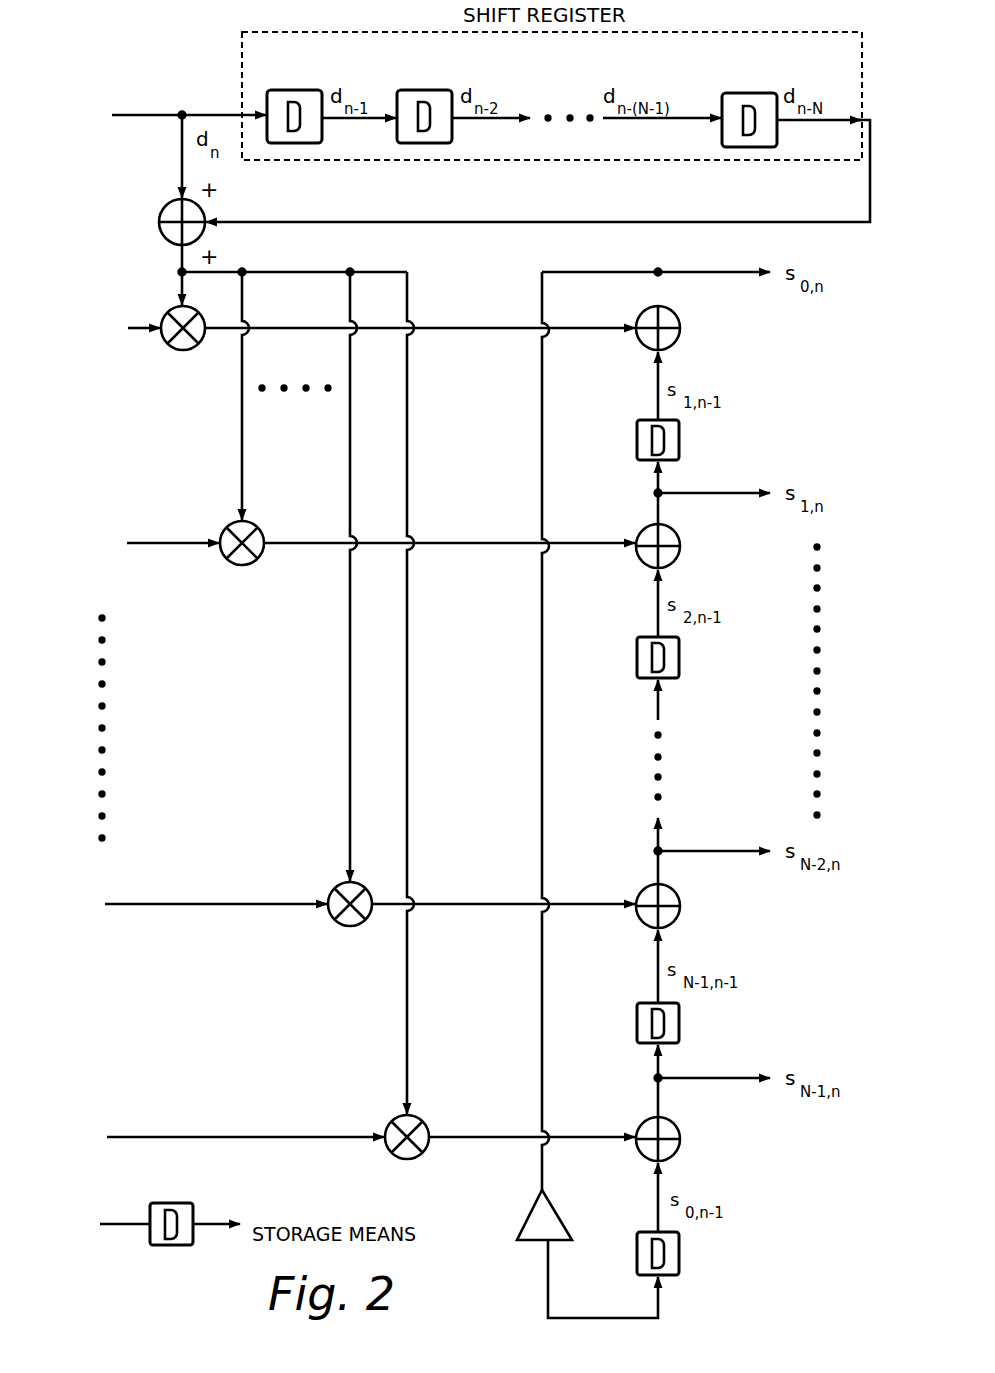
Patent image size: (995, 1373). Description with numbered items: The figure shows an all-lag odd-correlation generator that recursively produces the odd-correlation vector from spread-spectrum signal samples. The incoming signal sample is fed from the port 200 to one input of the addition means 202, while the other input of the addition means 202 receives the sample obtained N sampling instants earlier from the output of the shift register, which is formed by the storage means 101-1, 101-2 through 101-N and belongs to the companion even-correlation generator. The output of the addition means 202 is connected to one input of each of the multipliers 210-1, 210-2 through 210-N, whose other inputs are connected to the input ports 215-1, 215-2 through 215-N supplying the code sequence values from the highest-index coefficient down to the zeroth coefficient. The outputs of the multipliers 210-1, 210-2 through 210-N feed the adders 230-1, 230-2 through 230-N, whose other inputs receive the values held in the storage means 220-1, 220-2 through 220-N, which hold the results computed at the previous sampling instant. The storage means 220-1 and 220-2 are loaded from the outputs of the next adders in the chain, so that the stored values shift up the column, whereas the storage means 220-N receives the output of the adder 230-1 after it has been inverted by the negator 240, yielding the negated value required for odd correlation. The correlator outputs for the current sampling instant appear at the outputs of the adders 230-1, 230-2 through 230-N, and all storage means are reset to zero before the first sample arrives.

The port 200 is at (144, 122).
The storage means 101-1 is at (290, 90).
The storage means 101-2 is at (422, 90).
The storage means 101-N is at (750, 93).
The addition means 202 is at (158, 228).
The input port 215-1 is at (111, 340).
The input port 215-2 is at (140, 555).
The input port 215-N is at (223, 1149).
The multiplier 210-1 is at (172, 348).
The multiplier 210-2 is at (232, 563).
The multiplier 210-N is at (395, 1116).
The adder 230-1 is at (672, 340).
The adder 230-2 is at (672, 558).
The adder 230-N is at (672, 1151).
The storage means 220-1 is at (681, 438).
The storage means 220-2 is at (681, 656).
The storage means 220-N is at (681, 1252).
The negator 240 is at (530, 1213).